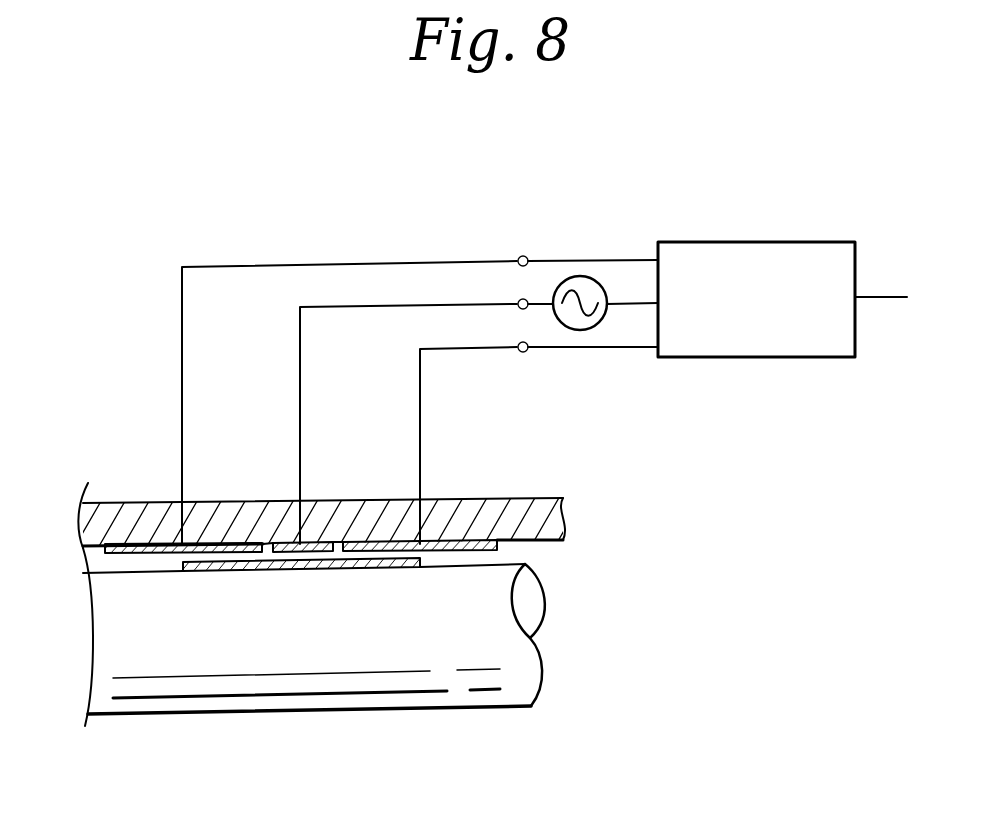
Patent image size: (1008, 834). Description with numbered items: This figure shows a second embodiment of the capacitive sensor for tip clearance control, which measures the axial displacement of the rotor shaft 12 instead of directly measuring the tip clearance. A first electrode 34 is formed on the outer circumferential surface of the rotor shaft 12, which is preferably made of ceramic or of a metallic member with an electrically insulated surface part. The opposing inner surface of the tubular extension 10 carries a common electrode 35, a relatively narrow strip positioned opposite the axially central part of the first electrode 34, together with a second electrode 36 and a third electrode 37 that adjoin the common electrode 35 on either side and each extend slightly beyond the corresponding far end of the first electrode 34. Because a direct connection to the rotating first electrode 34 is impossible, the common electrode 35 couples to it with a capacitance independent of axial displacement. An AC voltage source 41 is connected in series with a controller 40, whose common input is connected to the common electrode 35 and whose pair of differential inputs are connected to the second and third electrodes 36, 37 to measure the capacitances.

The tubular extension 10 is at (540, 503).
The rotor shaft 12 is at (402, 665).
The first electrode 34 is at (215, 571).
The common electrode 35 is at (312, 546).
The second electrode 36 is at (207, 545).
The third electrode 37 is at (452, 546).
The controller 40 is at (765, 357).
The AC voltage source 41 is at (585, 277).